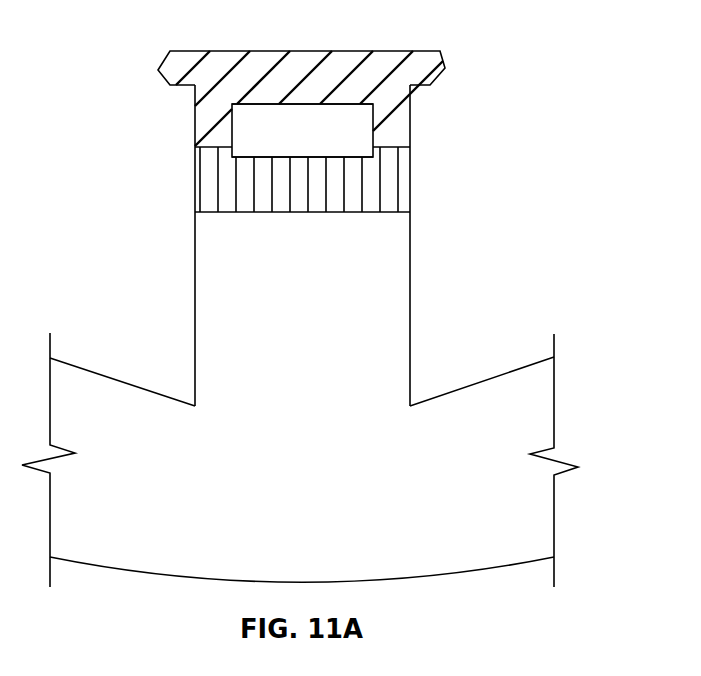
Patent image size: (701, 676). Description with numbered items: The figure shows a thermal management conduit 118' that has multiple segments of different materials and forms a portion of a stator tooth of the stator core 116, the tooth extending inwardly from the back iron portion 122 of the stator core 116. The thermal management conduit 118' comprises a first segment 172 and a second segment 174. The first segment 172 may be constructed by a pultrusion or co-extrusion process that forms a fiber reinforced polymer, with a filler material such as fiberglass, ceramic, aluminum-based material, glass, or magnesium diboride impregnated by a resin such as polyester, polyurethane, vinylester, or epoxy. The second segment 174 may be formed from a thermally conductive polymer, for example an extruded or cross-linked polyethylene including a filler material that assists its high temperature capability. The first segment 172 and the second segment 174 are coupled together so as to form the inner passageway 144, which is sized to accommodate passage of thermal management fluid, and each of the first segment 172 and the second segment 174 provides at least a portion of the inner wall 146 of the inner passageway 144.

The stator core 116 is at (492, 547).
The back iron portion 122 is at (102, 547).
The first segment 172 is at (445, 63).
The thermal management conduit 118' is at (346, 126).
The inner passageway 144 is at (278, 128).
The inner wall 146 is at (317, 105).
The second segment 174 is at (398, 197).